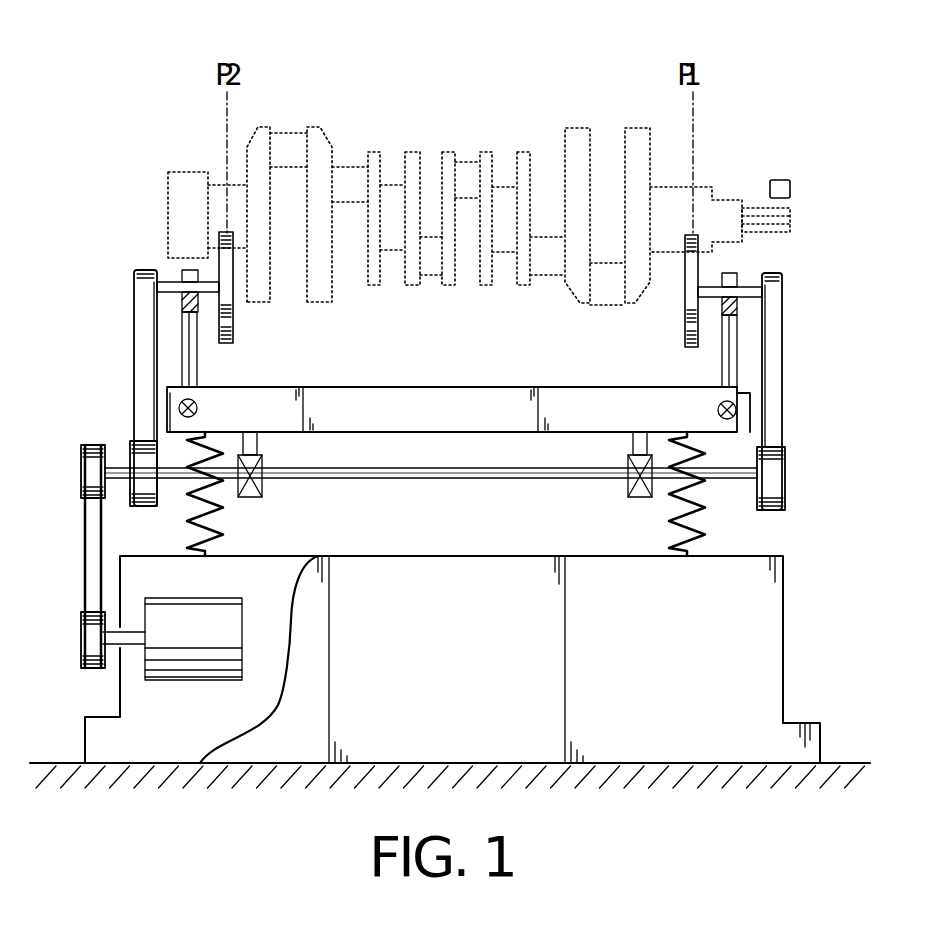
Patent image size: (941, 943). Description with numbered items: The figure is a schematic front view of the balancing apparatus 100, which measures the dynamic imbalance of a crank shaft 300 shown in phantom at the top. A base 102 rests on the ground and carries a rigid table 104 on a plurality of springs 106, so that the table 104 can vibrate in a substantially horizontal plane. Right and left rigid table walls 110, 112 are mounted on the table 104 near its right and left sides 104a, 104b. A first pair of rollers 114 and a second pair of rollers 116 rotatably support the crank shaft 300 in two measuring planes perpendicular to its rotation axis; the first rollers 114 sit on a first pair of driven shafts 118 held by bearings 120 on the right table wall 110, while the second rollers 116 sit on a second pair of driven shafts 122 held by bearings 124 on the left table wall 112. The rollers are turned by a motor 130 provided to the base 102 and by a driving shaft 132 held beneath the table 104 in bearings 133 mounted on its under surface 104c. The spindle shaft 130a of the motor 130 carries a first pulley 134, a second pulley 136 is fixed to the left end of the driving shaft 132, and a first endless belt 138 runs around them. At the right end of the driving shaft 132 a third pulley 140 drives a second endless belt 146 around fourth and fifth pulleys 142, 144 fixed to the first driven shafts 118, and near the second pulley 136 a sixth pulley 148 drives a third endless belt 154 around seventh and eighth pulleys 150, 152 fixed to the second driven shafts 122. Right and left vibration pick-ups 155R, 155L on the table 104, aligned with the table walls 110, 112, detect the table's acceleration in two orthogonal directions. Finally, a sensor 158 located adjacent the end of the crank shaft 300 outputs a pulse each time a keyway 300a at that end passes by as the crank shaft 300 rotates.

The balancing apparatus 100 is at (864, 446).
The base 102 is at (770, 640).
The table 104 is at (457, 404).
The right side of table 104a is at (757, 407).
The left side of table 104b is at (167, 397).
The under surface of table 104c is at (423, 434).
The springs 106 is at (207, 497).
The right table wall 110 is at (723, 367).
The left table wall 112 is at (193, 360).
The first pair of rollers 114 is at (686, 328).
The second pair of rollers 116 is at (236, 322).
The first pair of driven shafts 118 is at (740, 288).
The bearings 120 is at (738, 298).
The second pair of driven shafts 122 is at (175, 284).
The bearings 124 is at (178, 296).
The motor 130 is at (220, 577).
The spindle shaft 130a is at (130, 645).
The driving shaft 132 is at (498, 480).
The bearings 133 is at (263, 490).
The first pulley 134 is at (83, 638).
The second pulley 136 is at (82, 470).
The first endless belt 138 is at (85, 553).
The third pulley 140 is at (807, 488).
The fourth pulley 142 is at (800, 391).
The fifth pulley 144 is at (834, 389).
The second endless belt 146 is at (783, 430).
The sixth pulley 148 is at (157, 484).
The seventh pulley 150 is at (86, 379).
The eighth pulley 152 is at (116, 388).
The third endless belt 154 is at (137, 416).
The left vibration pick-up 155L is at (200, 410).
The right vibration pick-up 155R is at (720, 413).
The sensor 158 is at (783, 178).
The crank shaft 300 is at (525, 163).
The keyway 300a is at (786, 219).